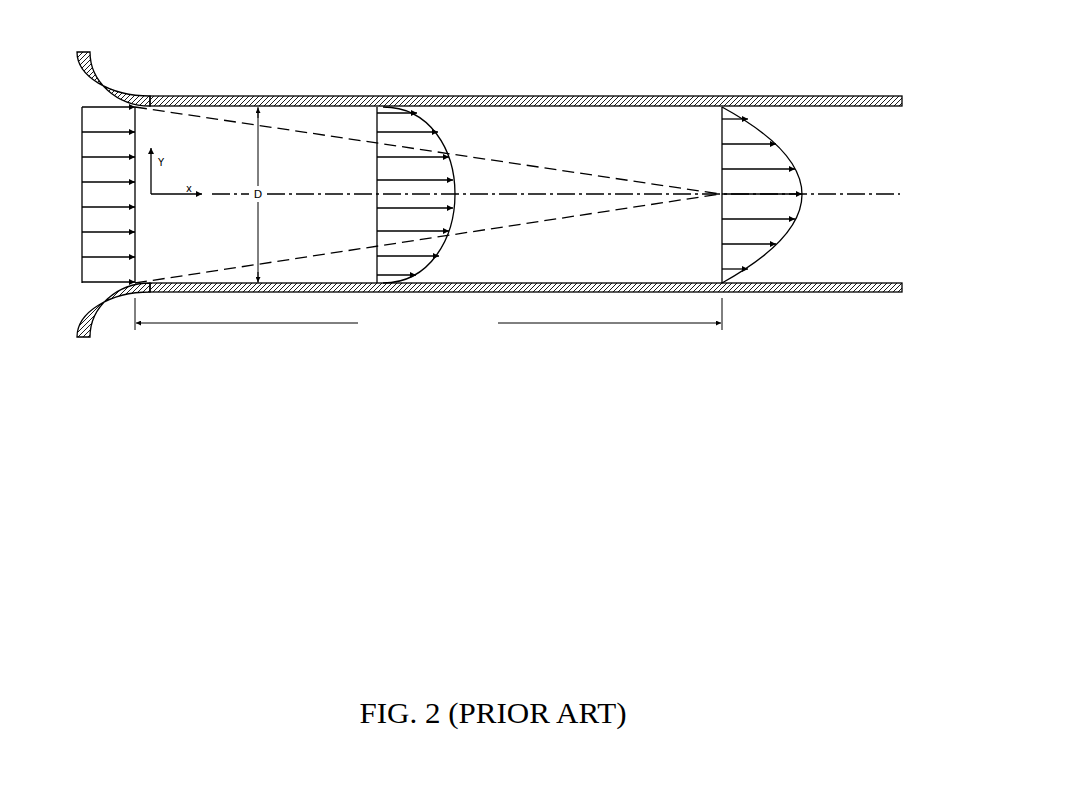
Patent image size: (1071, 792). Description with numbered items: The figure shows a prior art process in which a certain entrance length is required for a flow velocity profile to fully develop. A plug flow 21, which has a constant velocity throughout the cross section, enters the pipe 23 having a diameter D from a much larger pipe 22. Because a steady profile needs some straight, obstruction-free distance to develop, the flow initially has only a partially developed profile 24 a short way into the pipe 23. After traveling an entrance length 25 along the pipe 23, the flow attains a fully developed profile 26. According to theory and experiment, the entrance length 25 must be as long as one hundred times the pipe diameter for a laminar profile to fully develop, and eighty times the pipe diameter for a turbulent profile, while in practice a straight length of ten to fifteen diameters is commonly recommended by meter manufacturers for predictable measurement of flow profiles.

The plug flow 21 is at (105, 188).
The larger pipe 22 is at (105, 84).
The pipe 23 is at (468, 100).
The partially developed profile 24 is at (453, 194).
The entrance length 25 is at (500, 323).
The fully developed profile 26 is at (800, 188).